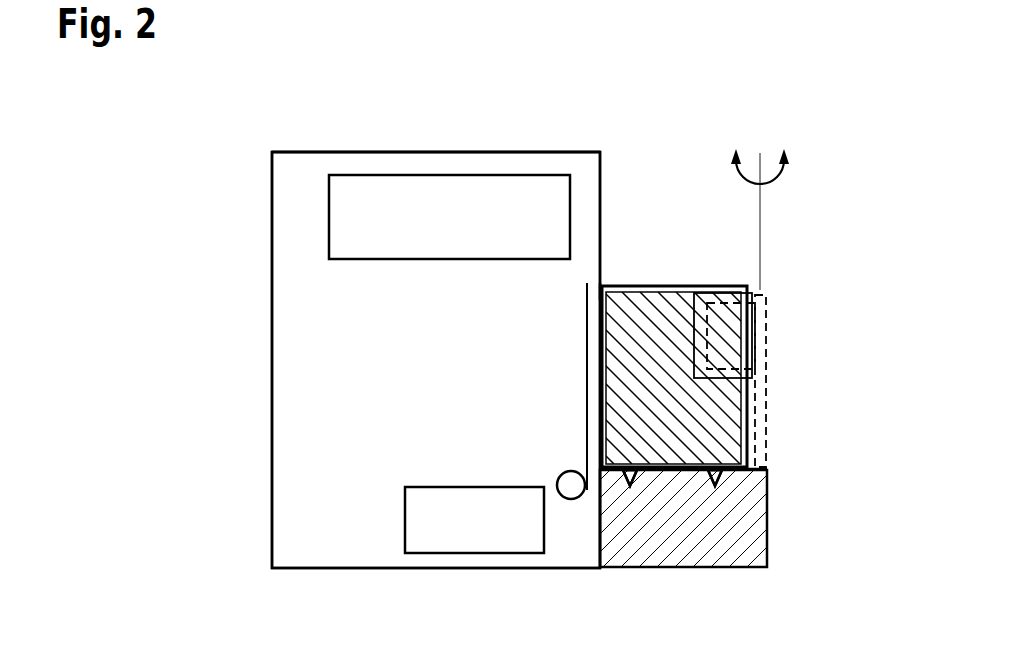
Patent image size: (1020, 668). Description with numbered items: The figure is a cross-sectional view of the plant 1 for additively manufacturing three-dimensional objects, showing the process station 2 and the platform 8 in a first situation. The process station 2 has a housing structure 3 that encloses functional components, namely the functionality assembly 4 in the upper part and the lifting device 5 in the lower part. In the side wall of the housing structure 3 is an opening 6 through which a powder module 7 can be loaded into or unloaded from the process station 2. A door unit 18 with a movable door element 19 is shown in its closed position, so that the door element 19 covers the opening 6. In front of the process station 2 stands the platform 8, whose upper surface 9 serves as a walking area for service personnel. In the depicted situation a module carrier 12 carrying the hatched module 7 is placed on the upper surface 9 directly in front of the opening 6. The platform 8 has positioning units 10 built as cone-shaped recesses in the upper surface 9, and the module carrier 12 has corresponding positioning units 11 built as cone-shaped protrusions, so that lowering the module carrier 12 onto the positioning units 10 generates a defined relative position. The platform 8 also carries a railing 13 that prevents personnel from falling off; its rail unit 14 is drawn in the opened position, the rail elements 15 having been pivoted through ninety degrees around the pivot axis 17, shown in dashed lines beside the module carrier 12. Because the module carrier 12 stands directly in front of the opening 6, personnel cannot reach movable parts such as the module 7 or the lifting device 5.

The plant 1 is at (212, 120).
The process station 2 is at (345, 140).
The housing structure 3 is at (525, 152).
The functionality assembly 4 is at (448, 175).
The lifting device 5 is at (472, 553).
The opening 6 is at (600, 297).
The powder module 7 is at (630, 285).
The platform 8 is at (767, 552).
The upper surface 9 is at (755, 470).
The positioning unit 10 is at (715, 484).
The positioning unit 11 is at (723, 478).
The module carrier 12 is at (673, 285).
The railing 13 is at (774, 343).
The rail unit 14 is at (738, 279).
The rail element 15 is at (731, 336).
The pivot axis 17 is at (770, 158).
The door unit 18 is at (569, 455).
The door element 19 is at (587, 357).